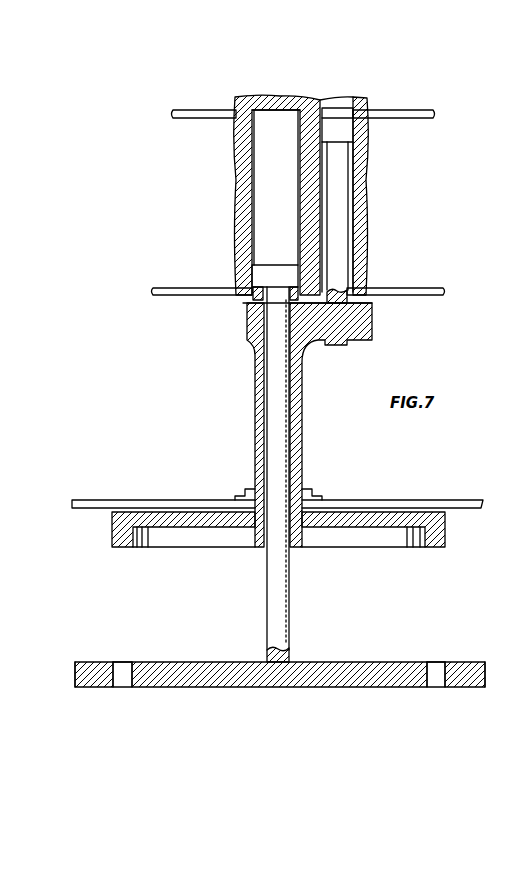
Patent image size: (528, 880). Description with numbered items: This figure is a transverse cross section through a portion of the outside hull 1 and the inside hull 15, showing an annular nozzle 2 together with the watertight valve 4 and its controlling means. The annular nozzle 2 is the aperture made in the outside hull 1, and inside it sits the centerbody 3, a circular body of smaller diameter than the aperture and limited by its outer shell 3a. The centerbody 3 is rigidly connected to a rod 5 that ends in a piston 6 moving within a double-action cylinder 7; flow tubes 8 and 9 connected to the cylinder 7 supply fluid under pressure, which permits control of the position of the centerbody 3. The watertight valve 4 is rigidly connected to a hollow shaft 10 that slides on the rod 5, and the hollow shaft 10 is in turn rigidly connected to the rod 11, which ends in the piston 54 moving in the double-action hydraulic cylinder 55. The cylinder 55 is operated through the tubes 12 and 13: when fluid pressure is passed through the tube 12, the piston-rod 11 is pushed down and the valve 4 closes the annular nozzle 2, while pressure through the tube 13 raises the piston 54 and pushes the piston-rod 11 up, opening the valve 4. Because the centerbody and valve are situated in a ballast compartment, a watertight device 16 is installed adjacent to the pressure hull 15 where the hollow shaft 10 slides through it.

The outside hull 1 is at (75, 676).
The annular nozzle 2 is at (125, 688).
The centerbody 3 is at (356, 662).
The outer shell 3a is at (125, 662).
The watertight valve 4 is at (430, 535).
The rod 5 is at (278, 617).
The piston 6 is at (267, 273).
The double-action cylinder 7 is at (245, 230).
The flow tube 8 is at (208, 119).
The flow tube 9 is at (170, 287).
The hollow shaft 10 is at (300, 431).
The rod 11 is at (337, 233).
The tube 12 is at (413, 110).
The tube 13 is at (412, 288).
The inside hull 15 is at (460, 500).
The watertight device 16 is at (305, 490).
The piston 54 is at (337, 128).
The double-action hydraulic cylinder 55 is at (367, 186).